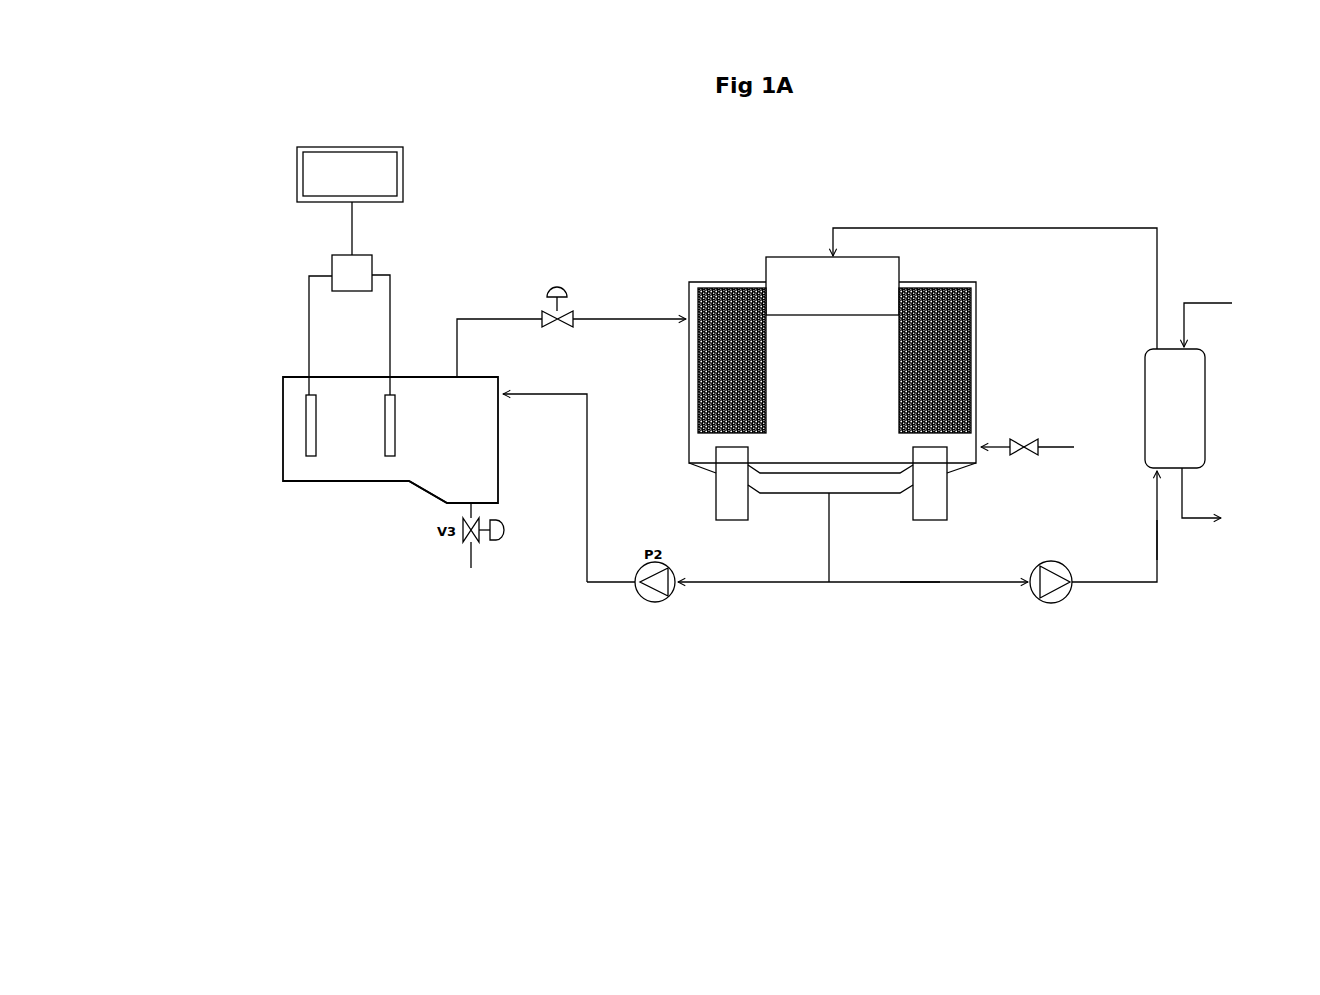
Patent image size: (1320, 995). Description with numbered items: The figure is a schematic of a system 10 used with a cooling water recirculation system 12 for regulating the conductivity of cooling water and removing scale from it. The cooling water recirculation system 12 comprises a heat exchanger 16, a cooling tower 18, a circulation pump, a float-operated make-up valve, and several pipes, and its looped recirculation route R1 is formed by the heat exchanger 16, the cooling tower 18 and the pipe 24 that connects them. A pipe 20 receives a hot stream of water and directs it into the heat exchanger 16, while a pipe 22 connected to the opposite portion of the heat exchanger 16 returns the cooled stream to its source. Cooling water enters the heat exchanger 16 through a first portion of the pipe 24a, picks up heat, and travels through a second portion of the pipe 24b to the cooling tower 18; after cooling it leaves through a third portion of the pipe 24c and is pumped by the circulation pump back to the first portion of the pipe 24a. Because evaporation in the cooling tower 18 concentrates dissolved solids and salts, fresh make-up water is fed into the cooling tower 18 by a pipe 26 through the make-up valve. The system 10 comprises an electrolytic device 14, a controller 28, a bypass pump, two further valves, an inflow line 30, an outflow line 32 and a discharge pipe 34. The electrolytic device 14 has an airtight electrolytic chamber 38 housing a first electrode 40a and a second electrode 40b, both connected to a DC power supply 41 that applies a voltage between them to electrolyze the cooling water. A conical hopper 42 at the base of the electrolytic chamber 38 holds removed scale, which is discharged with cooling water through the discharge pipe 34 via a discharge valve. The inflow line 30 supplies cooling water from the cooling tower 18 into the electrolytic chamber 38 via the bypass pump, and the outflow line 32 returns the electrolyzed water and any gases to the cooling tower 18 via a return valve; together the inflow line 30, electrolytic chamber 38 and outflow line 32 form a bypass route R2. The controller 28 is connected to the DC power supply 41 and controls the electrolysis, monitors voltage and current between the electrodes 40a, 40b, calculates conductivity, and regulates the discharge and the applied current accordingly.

The system 10 is at (370, 613).
The cooling water recirculation system 12 is at (862, 348).
The electrolytic device 14 is at (280, 364).
The heat exchanger 16 is at (1209, 408).
The cooling tower 18 is at (981, 312).
The pipe 20 is at (1211, 300).
The pipe 22 is at (1201, 514).
The pipe 24 is at (1112, 586).
The first portion of the pipe 24a is at (1170, 552).
The second portion of the pipe 24b is at (1066, 216).
The third portion of the pipe 24c is at (921, 600).
The pipe 26 is at (1053, 443).
The controller 28 is at (375, 140).
The inflow line 30 is at (590, 470).
The outflow line 32 is at (522, 314).
The discharge pipe 34 is at (475, 562).
The electrolytic chamber 38 is at (381, 484).
The first electrode 40a is at (299, 441).
The second electrode 40b is at (381, 442).
The DC power supply 41 is at (378, 258).
The conical hopper 42 is at (475, 497).
The recirculation route R1 is at (1128, 227).
The bypass route R2 is at (604, 586).